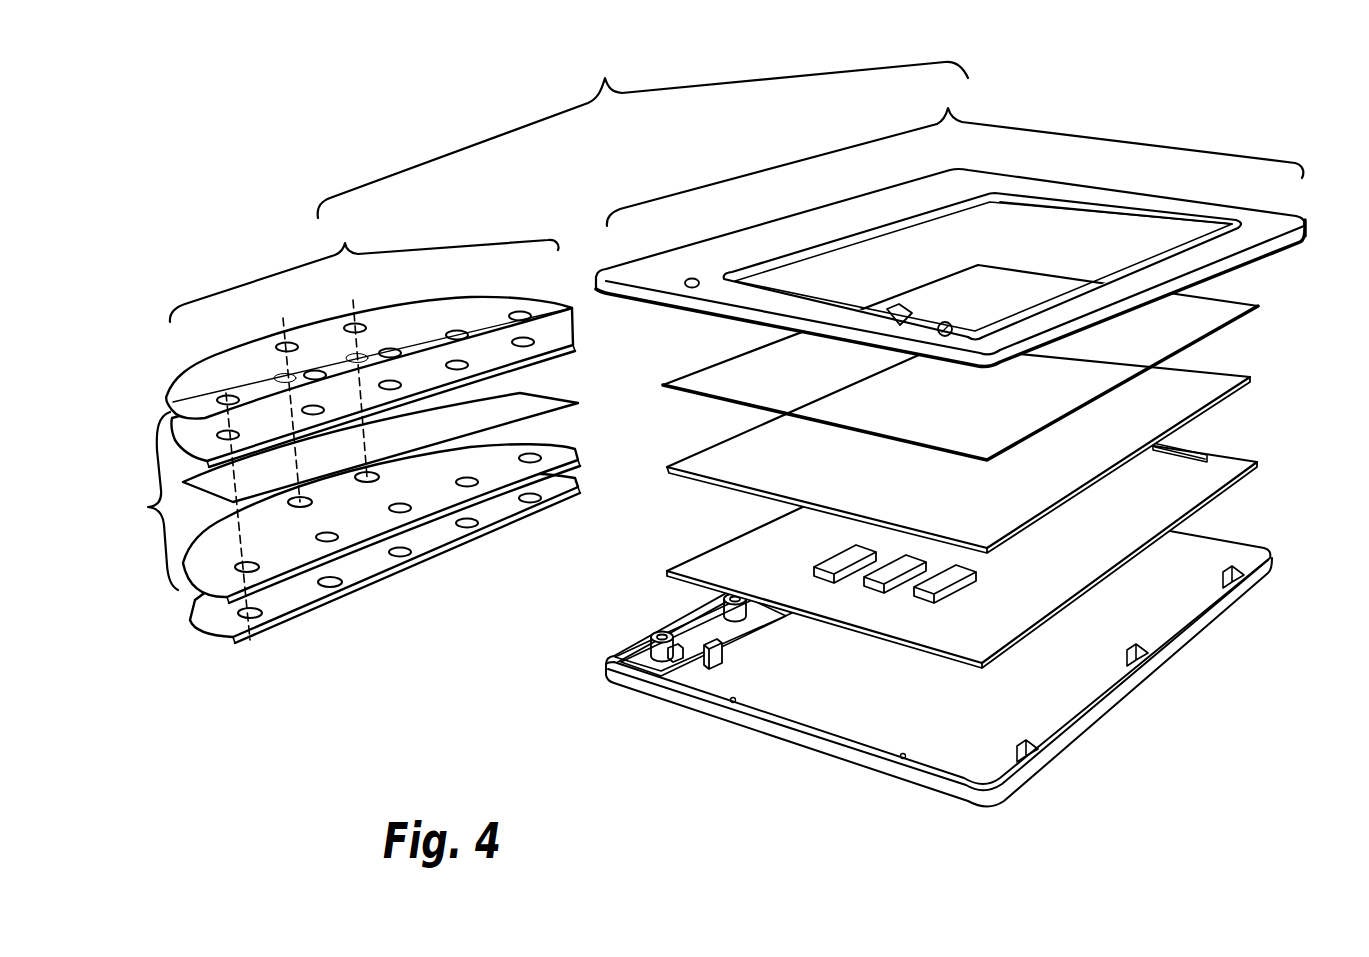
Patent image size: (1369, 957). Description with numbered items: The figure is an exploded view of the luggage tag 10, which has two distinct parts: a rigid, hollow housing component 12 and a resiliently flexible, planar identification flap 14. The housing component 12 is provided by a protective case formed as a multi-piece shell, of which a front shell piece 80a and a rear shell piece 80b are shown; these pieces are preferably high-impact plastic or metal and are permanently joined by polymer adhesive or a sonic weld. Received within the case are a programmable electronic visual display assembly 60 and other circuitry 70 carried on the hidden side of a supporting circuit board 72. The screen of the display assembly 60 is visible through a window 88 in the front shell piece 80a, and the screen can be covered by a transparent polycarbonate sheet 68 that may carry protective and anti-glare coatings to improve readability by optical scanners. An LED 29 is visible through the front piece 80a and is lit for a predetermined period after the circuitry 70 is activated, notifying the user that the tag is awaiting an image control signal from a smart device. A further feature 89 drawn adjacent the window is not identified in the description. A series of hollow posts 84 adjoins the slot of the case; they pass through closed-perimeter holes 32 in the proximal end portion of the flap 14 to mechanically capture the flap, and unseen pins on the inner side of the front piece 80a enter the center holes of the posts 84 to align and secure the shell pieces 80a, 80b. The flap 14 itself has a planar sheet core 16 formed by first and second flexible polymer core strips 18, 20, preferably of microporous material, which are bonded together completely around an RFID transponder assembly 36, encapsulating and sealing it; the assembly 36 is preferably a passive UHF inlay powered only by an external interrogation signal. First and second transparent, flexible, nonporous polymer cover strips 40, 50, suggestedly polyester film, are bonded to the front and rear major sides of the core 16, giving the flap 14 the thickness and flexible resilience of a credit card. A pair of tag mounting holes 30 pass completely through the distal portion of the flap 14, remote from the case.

The tag 10 is at (620, 66).
The first component 12 is at (955, 151).
The flap 14 is at (364, 266).
The planar sheet core 16 is at (147, 501).
The first flexible polymer core strip 18 is at (545, 338).
The second flexible polymer core strip 20 is at (550, 446).
The LED 29 is at (692, 278).
The tag mounting openings 30 is at (353, 305).
The closed perimeter openings 32 is at (250, 645).
The RFID transponder assembly 36 is at (495, 396).
The first cover strip 40 is at (537, 301).
The second cover strip 50 is at (553, 487).
The display assembly 60 is at (710, 480).
The transparent polycarbonate sheet 68 is at (715, 398).
The other circuitry 70 is at (936, 544).
The supporting circuit board 72 is at (693, 571).
The first shell piece 80a is at (967, 259).
The second shell piece 80b is at (767, 725).
The hollow posts 84 is at (652, 640).
The window 88 is at (1160, 215).
The bezel tab 89 is at (880, 302).